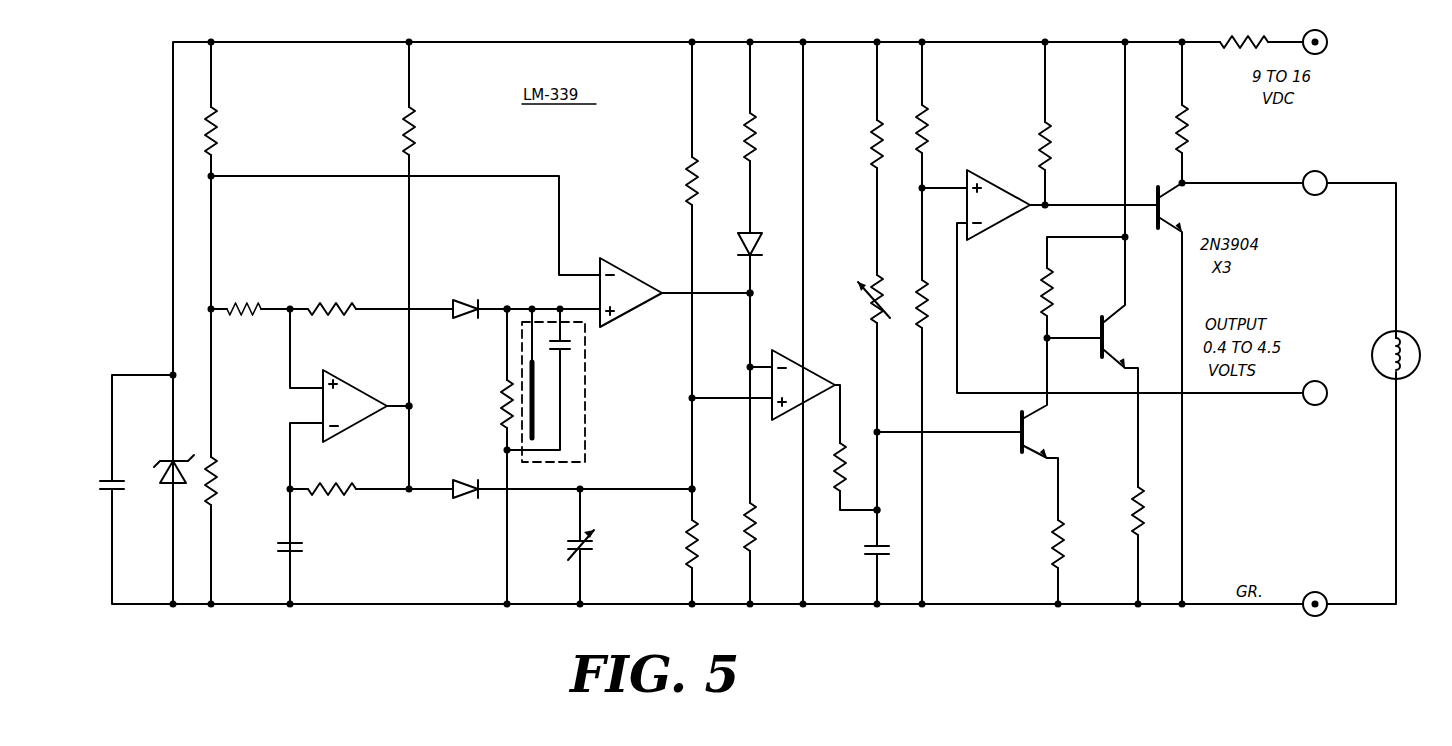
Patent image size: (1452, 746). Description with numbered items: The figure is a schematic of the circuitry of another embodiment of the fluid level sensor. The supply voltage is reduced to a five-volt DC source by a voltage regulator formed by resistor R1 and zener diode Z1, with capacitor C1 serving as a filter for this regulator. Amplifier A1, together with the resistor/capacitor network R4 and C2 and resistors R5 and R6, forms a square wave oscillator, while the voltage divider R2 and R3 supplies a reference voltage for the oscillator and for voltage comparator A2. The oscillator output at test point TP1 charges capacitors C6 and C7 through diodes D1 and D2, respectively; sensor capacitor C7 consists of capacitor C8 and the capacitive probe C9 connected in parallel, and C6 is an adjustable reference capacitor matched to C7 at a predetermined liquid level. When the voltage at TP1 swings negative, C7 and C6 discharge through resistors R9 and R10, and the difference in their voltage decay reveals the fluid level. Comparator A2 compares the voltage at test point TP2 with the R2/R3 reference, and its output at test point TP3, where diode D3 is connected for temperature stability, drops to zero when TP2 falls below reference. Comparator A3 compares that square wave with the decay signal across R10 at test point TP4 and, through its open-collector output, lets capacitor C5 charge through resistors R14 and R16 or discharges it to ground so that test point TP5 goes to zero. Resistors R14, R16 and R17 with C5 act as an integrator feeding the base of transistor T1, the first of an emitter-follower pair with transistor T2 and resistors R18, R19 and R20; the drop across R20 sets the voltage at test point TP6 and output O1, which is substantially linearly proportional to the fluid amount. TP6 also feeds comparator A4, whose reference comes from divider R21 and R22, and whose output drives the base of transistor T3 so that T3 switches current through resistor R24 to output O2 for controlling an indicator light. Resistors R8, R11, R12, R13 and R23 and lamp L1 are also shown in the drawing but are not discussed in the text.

The resistor R1 is at (1270, 35).
The resistor R2 is at (216, 131).
The resistor R3 is at (229, 480).
The resistor R4 is at (338, 472).
The resistor R5 is at (243, 300).
The resistor R6 is at (329, 300).
The resistor 10K R8 is at (414, 131).
The resistor R9 is at (486, 403).
The resistor R10 is at (713, 539).
The resistor 3.9M R11 is at (669, 177).
The resistor 10K R12 is at (752, 137).
The resistor 12K R13 is at (771, 529).
The resistor R14 is at (856, 144).
The resistor R16 is at (858, 311).
The resistor R17 is at (858, 462).
The resistor R18 is at (1026, 292).
The resistor R19 is at (1041, 544).
The resistor R20 is at (1117, 511).
The resistor R21 is at (945, 125).
The resistor R22 is at (939, 309).
The resistor 6.8K R23 is at (1066, 145).
The resistor R24 is at (1203, 128).
The capacitor C1 is at (123, 454).
The capacitor C2 is at (314, 551).
The capacitor C5 is at (867, 557).
The reference capacitor C6 is at (584, 545).
The sensor capacitor C7 is at (598, 392).
The capacitor C8 is at (583, 355).
The capacitive probe C9 is at (546, 401).
The diode D1 is at (470, 289).
The diode D2 is at (465, 469).
The diode D3 is at (738, 233).
The zener diode Z1 is at (170, 483).
The amplifier A1 is at (349, 408).
The voltage comparator A2 is at (631, 288).
The comparator A3 is at (806, 386).
The comparator A4 is at (989, 201).
The transistor T1 is at (1040, 435).
The transistor T2 is at (1117, 342).
The transistor T3 is at (1173, 209).
The test point TP1 is at (428, 398).
The test point TP2 is at (516, 296).
The test point TP3 is at (768, 295).
The test point TP4 is at (712, 489).
The test point TP5 is at (895, 507).
The test point TP6 is at (1157, 399).
The lamp L1 is at (1408, 358).
The output O1 is at (1321, 405).
The output O2 is at (1315, 196).